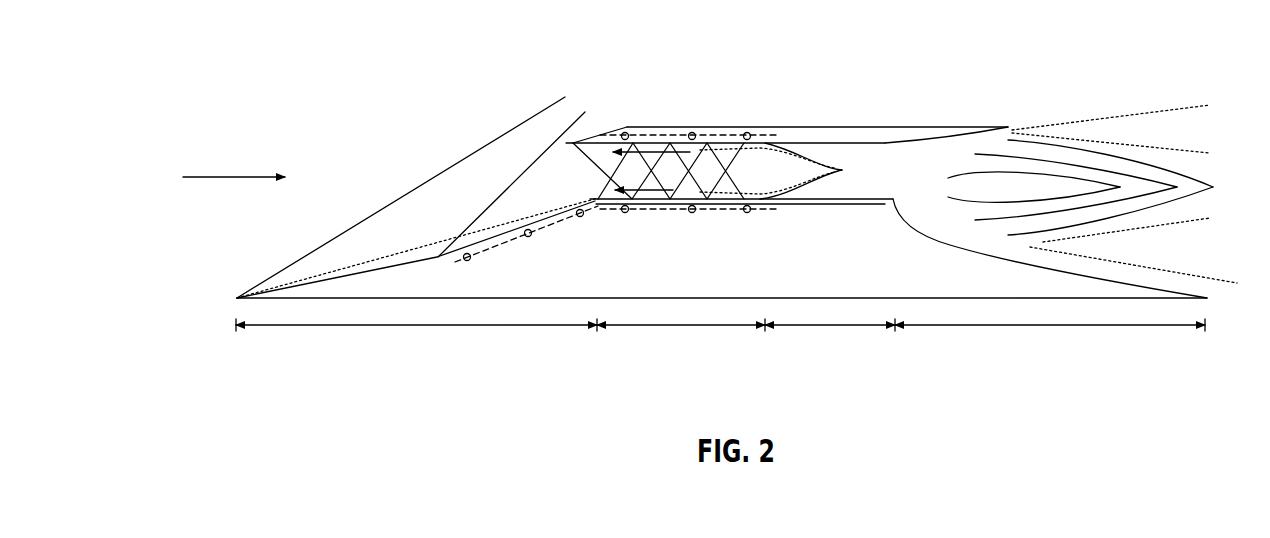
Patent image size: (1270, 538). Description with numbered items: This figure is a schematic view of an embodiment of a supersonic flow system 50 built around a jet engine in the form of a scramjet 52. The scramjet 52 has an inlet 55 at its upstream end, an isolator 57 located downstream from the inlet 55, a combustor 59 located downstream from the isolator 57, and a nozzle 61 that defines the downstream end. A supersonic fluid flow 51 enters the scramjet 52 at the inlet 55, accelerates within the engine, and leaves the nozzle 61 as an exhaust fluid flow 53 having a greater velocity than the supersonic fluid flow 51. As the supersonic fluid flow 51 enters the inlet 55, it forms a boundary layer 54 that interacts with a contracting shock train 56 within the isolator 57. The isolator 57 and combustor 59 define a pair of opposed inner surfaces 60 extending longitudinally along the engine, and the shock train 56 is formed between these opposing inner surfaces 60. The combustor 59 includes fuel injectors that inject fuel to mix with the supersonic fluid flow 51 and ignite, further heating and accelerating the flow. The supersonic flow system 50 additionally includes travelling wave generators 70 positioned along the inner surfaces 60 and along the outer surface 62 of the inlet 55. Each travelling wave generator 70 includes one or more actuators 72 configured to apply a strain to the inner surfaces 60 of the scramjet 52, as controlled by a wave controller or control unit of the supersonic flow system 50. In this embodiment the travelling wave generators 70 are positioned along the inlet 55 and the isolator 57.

The supersonic flow system 50 is at (392, 155).
The supersonic fluid flow 51 is at (222, 175).
The scramjet 52 is at (856, 124).
The exhaust fluid flow 53 is at (1128, 146).
The boundary layer 54 is at (408, 247).
The inlet 55 is at (402, 328).
The contracting shock train 56 is at (683, 156).
The isolator 57 is at (697, 328).
The combustor 59 is at (842, 170).
The inner surfaces 60 is at (878, 142).
The nozzle 61 is at (1037, 328).
The outer surface 62 is at (503, 232).
The travelling wave generator 70 is at (653, 132).
The actuators 72 is at (624, 132).